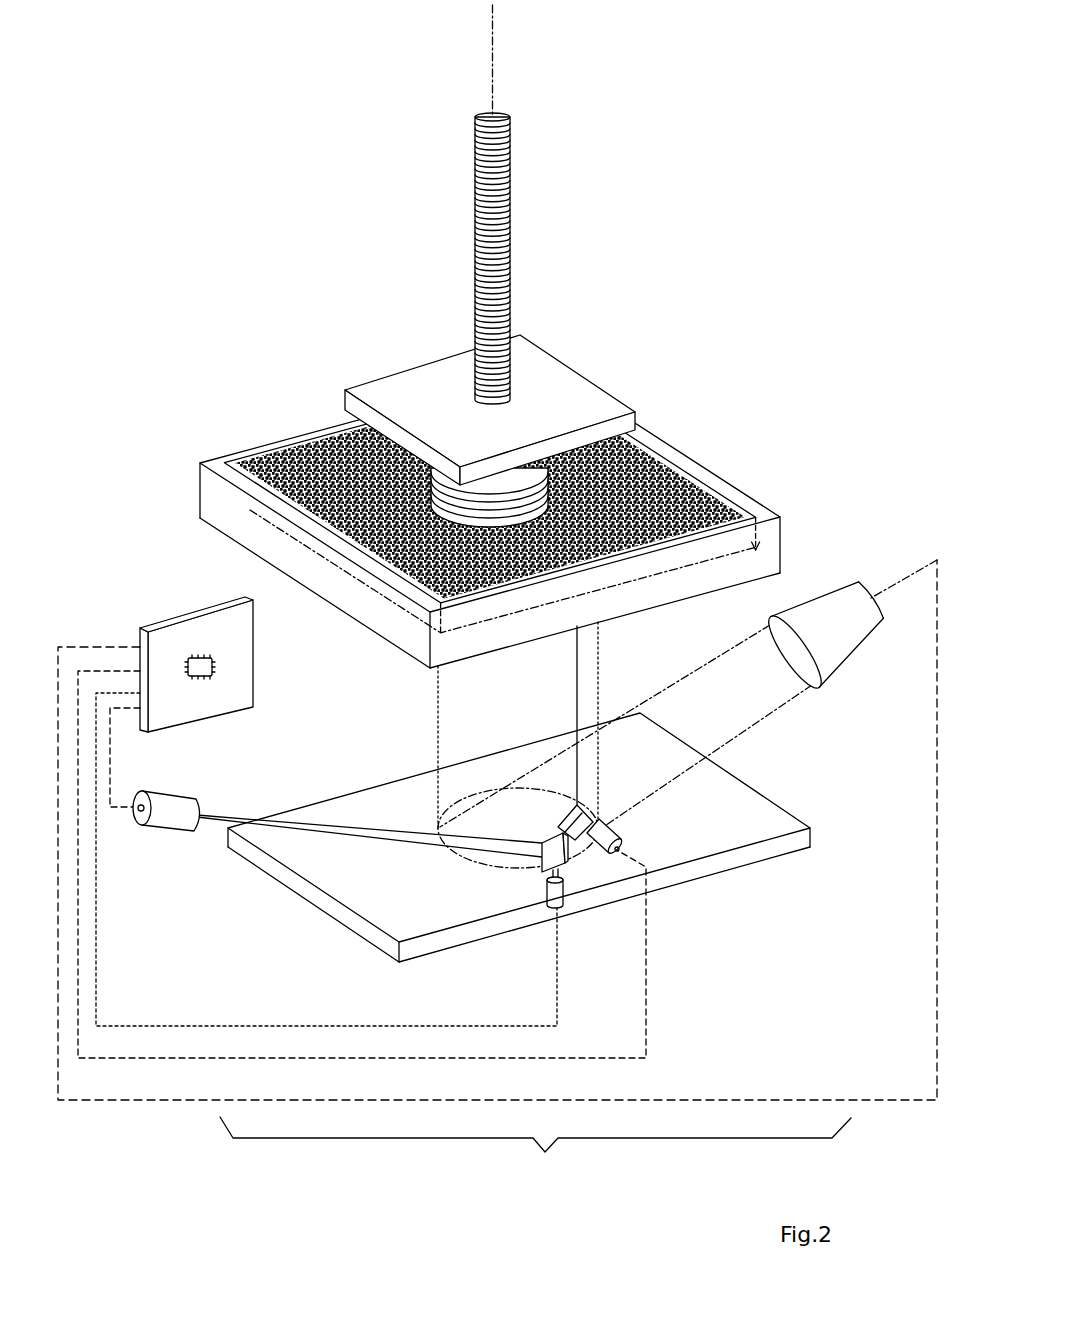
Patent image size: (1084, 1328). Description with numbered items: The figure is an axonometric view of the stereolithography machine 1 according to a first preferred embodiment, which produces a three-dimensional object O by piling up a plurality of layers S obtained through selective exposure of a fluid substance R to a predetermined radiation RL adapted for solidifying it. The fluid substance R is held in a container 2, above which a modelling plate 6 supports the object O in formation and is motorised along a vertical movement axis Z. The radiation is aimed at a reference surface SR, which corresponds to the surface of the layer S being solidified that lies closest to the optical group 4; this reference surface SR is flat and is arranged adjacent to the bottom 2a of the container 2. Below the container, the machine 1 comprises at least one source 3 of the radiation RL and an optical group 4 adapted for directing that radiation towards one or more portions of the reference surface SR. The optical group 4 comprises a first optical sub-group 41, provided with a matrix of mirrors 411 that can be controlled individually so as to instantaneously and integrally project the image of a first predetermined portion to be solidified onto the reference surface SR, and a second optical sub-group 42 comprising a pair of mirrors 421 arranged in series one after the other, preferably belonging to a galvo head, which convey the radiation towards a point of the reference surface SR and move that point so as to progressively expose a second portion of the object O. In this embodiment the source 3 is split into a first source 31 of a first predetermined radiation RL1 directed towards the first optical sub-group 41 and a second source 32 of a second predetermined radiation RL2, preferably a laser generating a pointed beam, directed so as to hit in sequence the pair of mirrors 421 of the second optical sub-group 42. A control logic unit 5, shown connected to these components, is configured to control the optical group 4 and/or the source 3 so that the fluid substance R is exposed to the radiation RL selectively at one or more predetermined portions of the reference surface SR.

The stereolithography machine 1 is at (757, 172).
The container 2 is at (795, 537).
The bottom 2a is at (613, 627).
The source 3 is at (542, 706).
The first source 31 is at (867, 597).
The second source 32 is at (168, 818).
The optical group 4 is at (533, 905).
The first optical sub-group 41 is at (742, 895).
The matrix of mirrors 411 is at (740, 832).
The second optical sub-group 42 is at (603, 919).
The pair of mirrors 421 is at (555, 811).
The control logic unit 5 is at (178, 590).
The modelling plate 6 is at (570, 400).
The vertical movement axis Z is at (493, 62).
The fluid substance R is at (313, 480).
The layer S is at (620, 457).
The three-dimensional object O is at (645, 475).
The reference surface SR is at (690, 552).
The predetermined radiation RL is at (513, 757).
The first predetermined radiation RL1 is at (703, 682).
The second predetermined radiation RL2 is at (310, 825).